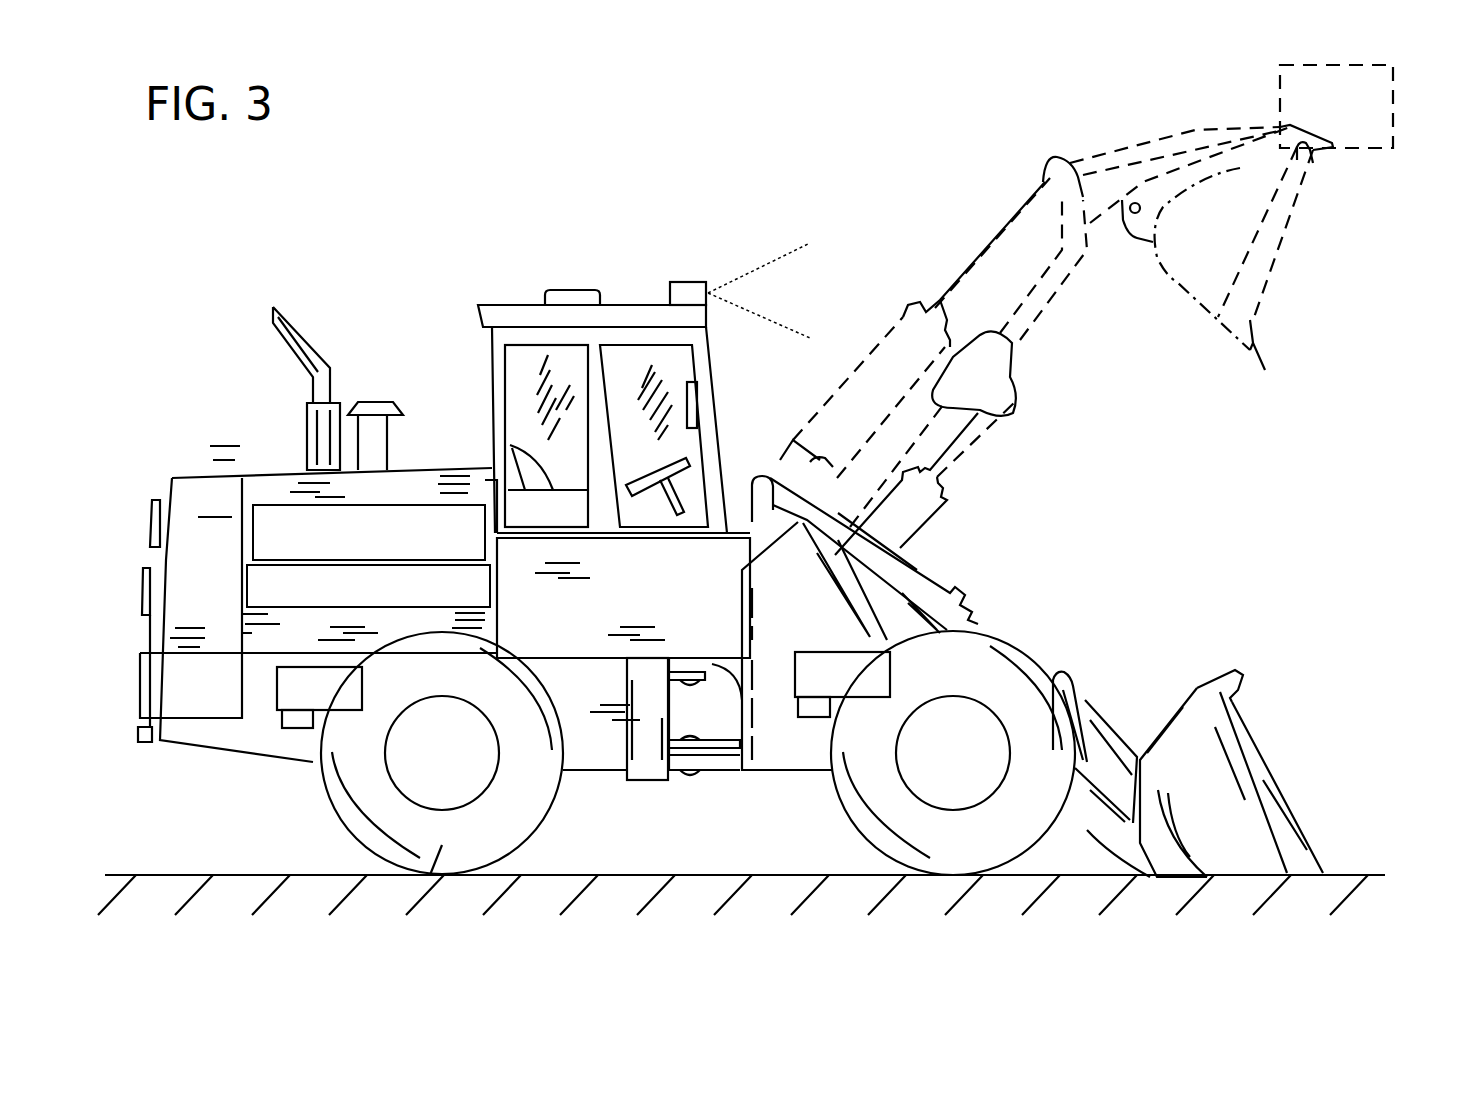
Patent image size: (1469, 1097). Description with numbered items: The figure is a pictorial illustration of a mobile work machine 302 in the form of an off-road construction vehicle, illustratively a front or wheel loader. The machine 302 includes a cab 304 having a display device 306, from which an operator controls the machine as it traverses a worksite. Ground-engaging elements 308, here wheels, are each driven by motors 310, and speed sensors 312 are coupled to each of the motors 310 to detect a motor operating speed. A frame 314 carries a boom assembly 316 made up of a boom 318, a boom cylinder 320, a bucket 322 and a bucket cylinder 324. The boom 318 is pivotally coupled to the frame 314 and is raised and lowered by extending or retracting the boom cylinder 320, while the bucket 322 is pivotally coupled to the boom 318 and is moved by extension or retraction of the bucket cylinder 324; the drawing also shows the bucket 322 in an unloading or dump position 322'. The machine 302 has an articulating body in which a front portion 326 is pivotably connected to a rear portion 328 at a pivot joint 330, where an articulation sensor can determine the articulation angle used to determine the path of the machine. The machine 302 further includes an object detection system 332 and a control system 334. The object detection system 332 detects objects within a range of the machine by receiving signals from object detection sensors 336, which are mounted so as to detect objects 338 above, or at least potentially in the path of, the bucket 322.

The mobile work machine 302 is at (188, 304).
The cab 304 is at (722, 428).
The display device 306 is at (688, 392).
The ground-engaging elements 308 is at (440, 845).
The motors 310 is at (283, 695).
The speed sensors 312 is at (295, 730).
The frame 314 is at (610, 757).
The boom assembly 316 is at (1380, 456).
The boom 318 is at (1057, 293).
The boom cylinder 320 is at (927, 497).
The bucket 322 is at (1217, 773).
The unloading or dump position 322' is at (1261, 247).
The bucket cylinder 324 is at (938, 602).
The front portion 326 is at (785, 750).
The rear portion 328 is at (593, 745).
The pivot joint 330 is at (702, 658).
The object detection system 332 is at (369, 532).
The control system 334 is at (368, 586).
The object detection sensors 336 is at (685, 282).
The objects 338 is at (1373, 148).